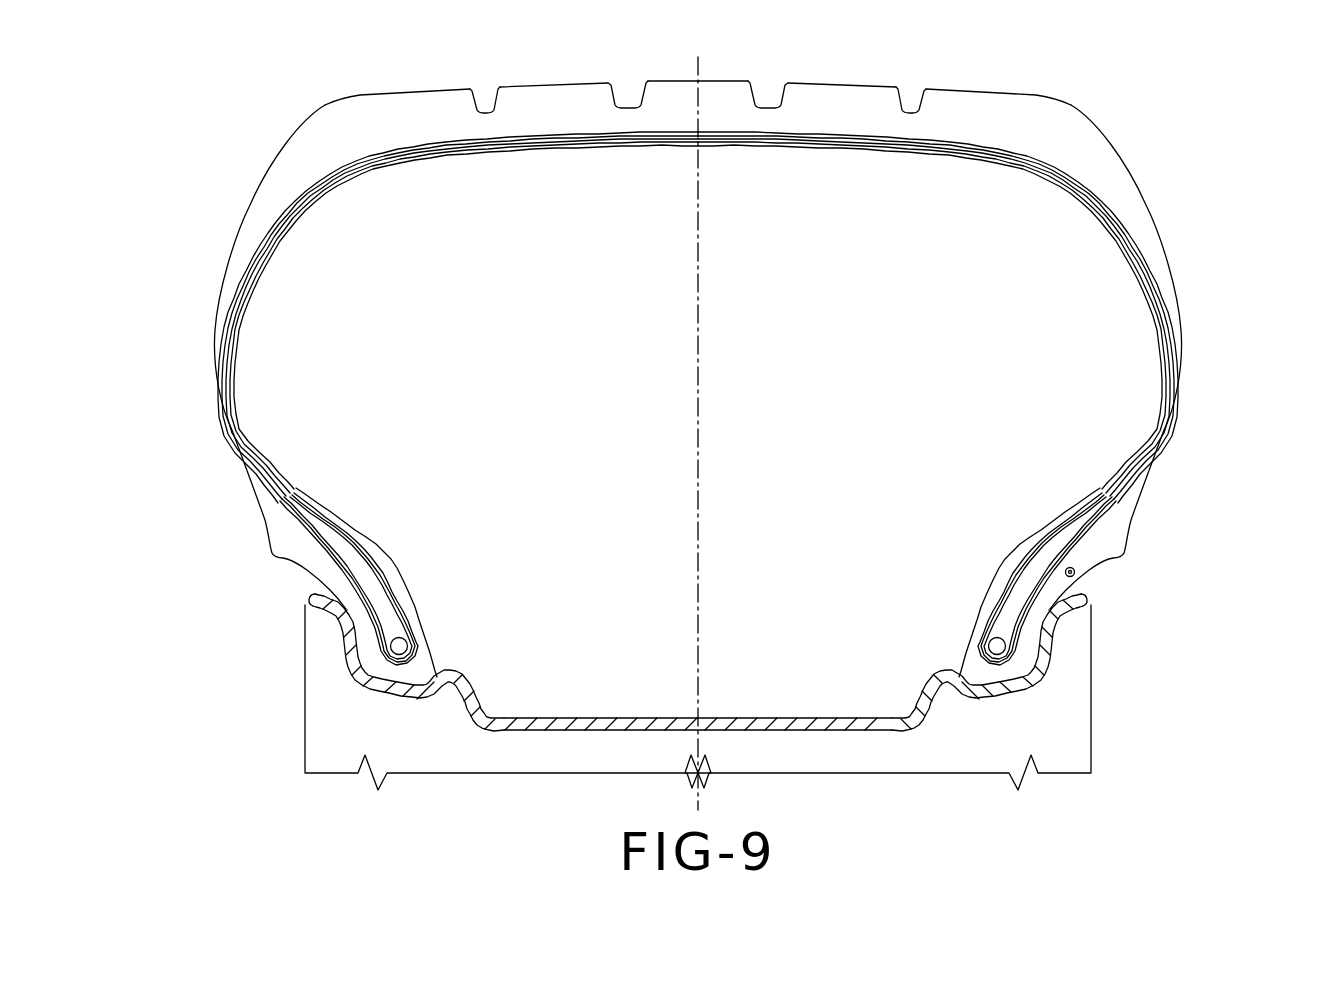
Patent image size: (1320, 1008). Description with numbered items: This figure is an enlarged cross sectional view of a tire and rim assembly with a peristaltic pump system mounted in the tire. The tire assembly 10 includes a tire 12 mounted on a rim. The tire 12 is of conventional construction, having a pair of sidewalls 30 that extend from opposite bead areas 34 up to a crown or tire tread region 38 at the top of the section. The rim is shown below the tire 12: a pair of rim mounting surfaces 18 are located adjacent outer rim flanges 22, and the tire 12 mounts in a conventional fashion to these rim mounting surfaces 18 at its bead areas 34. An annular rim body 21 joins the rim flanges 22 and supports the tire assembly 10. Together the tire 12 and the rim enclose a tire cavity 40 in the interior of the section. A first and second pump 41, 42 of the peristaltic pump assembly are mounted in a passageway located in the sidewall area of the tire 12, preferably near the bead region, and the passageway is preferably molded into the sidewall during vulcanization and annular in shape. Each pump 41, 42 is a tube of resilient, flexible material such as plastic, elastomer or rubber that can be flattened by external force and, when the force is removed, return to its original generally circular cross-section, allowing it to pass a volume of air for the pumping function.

The tire assembly 10 is at (698, 424).
The tire 12 is at (1057, 120).
The rim mounting surfaces 18 is at (1018, 687).
The annular rim body 21 is at (743, 732).
The rim flanges 22 is at (1040, 612).
The sidewalls 30 is at (215, 278).
The bead areas 34 is at (995, 645).
The tire tread region 38 is at (716, 90).
The tire cavity 40 is at (810, 391).
The first pump 41 is at (1147, 552).
The second pump 42 is at (1076, 569).